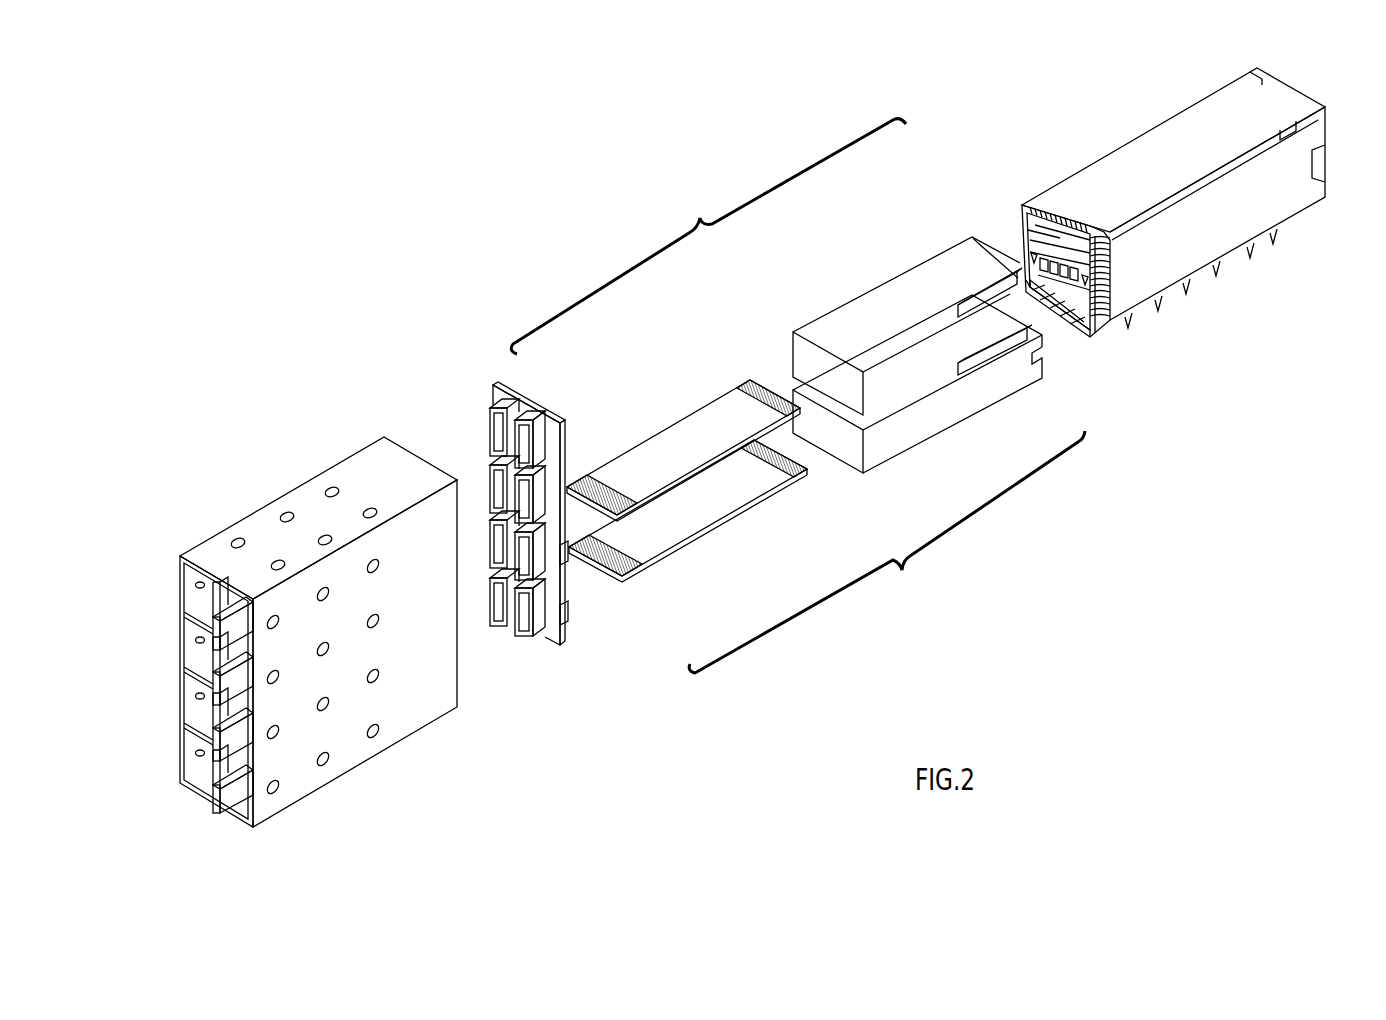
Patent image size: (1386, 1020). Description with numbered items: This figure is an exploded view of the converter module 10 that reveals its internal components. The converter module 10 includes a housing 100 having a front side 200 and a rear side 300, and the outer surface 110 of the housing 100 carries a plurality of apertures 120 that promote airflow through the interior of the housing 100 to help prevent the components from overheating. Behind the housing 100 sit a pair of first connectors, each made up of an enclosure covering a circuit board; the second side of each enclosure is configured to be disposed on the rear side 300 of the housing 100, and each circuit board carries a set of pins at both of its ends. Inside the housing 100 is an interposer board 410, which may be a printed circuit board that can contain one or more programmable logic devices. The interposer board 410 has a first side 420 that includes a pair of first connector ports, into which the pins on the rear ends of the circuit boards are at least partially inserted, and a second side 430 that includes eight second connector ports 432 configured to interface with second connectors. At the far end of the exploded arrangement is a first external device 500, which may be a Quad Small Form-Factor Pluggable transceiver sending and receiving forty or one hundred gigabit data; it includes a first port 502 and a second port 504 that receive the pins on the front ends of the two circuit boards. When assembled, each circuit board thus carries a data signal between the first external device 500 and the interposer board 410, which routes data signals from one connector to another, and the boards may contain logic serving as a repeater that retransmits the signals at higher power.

The converter module 10 is at (384, 196).
The housing 100 is at (414, 753).
The outer surface 110 is at (363, 467).
The apertures 120 is at (368, 513).
The front side 200 is at (176, 806).
The rear side 300 is at (416, 432).
The interposer board 410 is at (570, 652).
The first side 420 is at (550, 397).
The second side 430 is at (562, 672).
The second connector ports 432 is at (522, 475).
The first external device 500 is at (1302, 230).
The first port 502 is at (1027, 223).
The second port 504 is at (1067, 317).